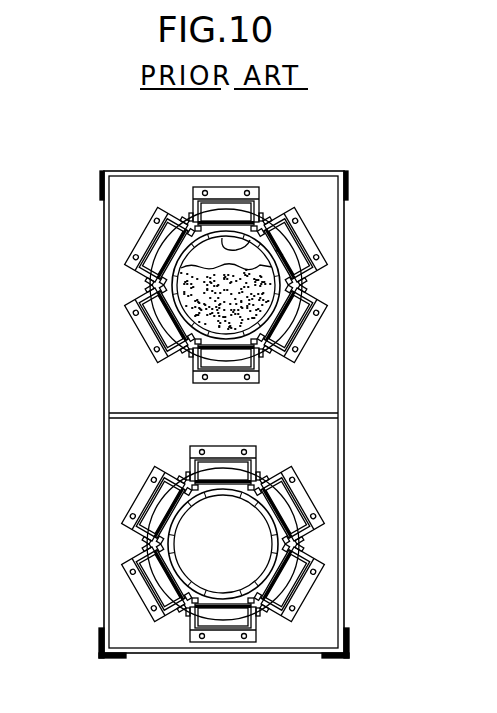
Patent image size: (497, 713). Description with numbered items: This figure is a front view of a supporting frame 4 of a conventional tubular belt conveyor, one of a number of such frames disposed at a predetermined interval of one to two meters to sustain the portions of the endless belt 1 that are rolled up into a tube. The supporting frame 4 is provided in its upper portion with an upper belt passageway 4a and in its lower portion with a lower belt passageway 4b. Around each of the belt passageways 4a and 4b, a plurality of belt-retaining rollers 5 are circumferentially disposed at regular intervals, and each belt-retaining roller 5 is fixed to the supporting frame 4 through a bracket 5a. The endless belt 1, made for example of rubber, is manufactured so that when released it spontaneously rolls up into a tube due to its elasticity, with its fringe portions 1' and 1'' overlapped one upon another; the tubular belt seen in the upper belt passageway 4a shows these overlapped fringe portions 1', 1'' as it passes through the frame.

The endless belt 1 is at (162, 415).
The fringe portion 1' is at (339, 233).
The fringe portion 1'' is at (249, 186).
The supporting frame 4 is at (345, 288).
The upper belt passageway 4a is at (185, 212).
The lower belt passageway 4b is at (300, 476).
The belt-retaining roller 5 is at (143, 254).
The bracket 5a is at (300, 230).